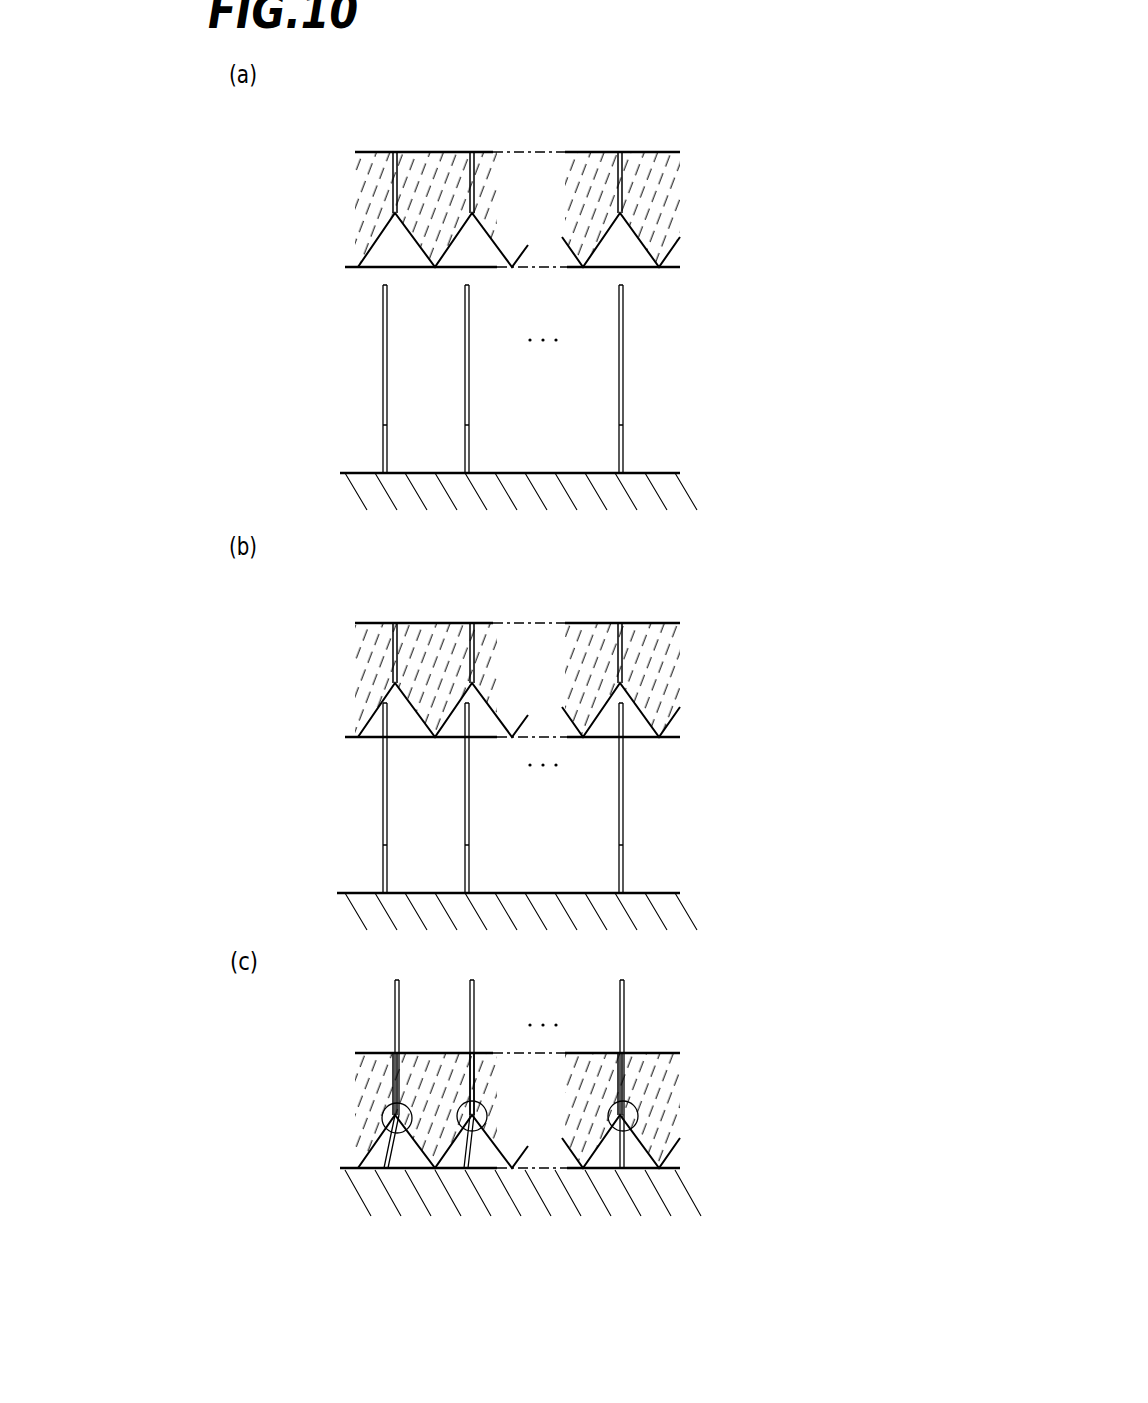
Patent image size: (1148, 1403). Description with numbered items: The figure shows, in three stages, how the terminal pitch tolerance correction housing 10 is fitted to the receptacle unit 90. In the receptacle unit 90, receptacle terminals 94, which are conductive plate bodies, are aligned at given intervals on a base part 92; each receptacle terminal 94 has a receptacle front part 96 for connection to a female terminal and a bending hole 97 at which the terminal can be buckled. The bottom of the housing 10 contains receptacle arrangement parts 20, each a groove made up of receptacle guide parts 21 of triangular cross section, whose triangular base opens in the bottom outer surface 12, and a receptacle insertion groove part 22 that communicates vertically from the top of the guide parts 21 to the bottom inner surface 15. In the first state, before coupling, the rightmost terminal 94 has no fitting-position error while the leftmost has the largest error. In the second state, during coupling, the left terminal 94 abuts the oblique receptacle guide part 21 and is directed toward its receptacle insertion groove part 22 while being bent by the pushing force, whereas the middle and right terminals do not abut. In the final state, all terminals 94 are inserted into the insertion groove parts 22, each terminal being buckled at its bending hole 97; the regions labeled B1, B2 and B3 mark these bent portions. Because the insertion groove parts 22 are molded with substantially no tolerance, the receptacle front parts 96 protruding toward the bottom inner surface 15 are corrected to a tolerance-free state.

The terminal pitch tolerance correction housing 10 is at (512, 683).
The bottom outer surface 12 is at (345, 268).
The bottom inner surface 15 is at (355, 150).
The receptacle arrangement part 20 is at (512, 683).
The receptacle guide part 21 is at (680, 1240).
The receptacle insertion groove part 22 is at (395, 152).
The receptacle unit 90 is at (521, 853).
The base part 92 is at (347, 472).
The receptacle terminal 94 is at (500, 767).
The receptacle front part 96 is at (501, 836).
The bending hole 97 is at (383, 364).
The contact region B1 is at (640, 1115).
The contact region B2 is at (488, 1116).
The contact region B3 is at (381, 1116).